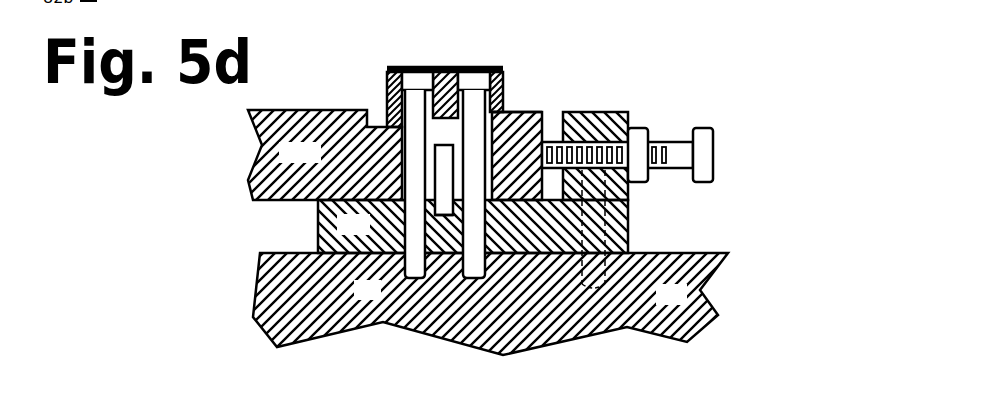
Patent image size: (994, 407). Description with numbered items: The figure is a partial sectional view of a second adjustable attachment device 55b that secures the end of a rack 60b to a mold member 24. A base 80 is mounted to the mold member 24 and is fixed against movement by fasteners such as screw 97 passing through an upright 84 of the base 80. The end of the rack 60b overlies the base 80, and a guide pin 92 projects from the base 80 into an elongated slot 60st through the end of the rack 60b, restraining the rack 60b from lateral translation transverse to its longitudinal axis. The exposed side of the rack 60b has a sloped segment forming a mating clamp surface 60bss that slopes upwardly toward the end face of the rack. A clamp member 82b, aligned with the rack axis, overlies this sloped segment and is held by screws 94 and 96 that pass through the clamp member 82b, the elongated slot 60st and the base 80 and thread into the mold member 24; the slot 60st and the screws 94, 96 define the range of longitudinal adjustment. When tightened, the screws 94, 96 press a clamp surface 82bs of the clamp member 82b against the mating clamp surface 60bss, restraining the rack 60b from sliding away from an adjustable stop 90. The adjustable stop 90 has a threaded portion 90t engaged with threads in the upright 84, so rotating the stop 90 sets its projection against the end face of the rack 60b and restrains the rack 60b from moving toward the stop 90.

The mold member 24 is at (682, 303).
The second adjustable attachment device 55b is at (686, 27).
The rack 60b is at (316, 161).
The mating clamp surface 60bss is at (525, 110).
The elongated slot 60st is at (448, 72).
The base 80 is at (364, 233).
The clamp member 82b is at (388, 67).
The clamp surface 82bs is at (447, 132).
The upright 84 is at (628, 112).
The adjustable stop 90 is at (700, 158).
The threaded portion 90t is at (663, 170).
The guide pin 92 is at (443, 216).
The screw 94 is at (473, 80).
The screw 96 is at (427, 78).
The screw 97 is at (597, 112).